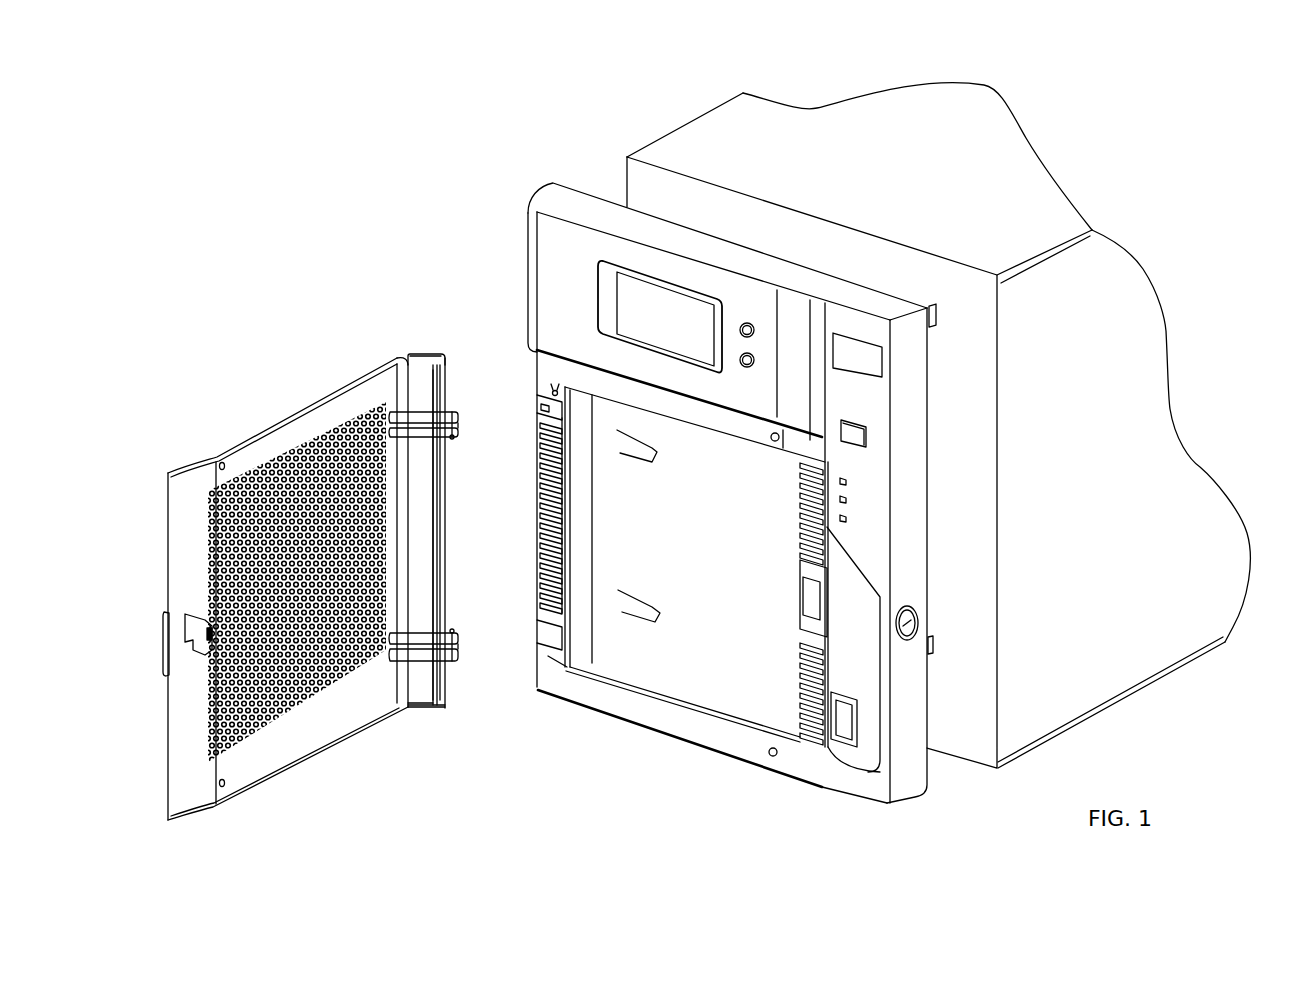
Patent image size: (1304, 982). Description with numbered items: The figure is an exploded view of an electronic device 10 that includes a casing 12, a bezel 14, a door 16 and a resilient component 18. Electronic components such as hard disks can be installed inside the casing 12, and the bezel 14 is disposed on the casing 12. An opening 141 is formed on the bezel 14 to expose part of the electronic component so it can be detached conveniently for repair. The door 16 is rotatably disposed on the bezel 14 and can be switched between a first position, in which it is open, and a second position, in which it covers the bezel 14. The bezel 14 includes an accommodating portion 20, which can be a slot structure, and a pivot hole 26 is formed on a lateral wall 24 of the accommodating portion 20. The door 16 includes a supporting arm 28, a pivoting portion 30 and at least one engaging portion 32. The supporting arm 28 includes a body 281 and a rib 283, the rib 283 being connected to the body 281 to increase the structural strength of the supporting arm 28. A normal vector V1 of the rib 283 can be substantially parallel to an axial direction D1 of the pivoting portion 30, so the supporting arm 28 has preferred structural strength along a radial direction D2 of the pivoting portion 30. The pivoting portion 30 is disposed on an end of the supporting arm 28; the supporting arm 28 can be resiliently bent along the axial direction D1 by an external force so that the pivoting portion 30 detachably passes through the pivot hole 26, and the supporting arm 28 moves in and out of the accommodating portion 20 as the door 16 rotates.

The electronic device 10 is at (288, 176).
The casing 12 is at (1022, 189).
The bezel 14 is at (545, 198).
The opening 141 is at (725, 685).
The door 16 is at (270, 447).
The resilient component 18 is at (657, 455).
The accommodating portion 20 is at (526, 397).
The lateral wall 24 is at (540, 407).
The pivot hole 26 is at (555, 390).
The supporting arm 28 is at (416, 410).
The body 281 is at (428, 652).
The rib 283 is at (400, 662).
The pivoting portion 30 is at (455, 437).
The engaging portion 32 is at (450, 438).
The axial direction D1 is at (455, 630).
The radial direction D2 is at (455, 630).
The normal vector V1 is at (417, 645).